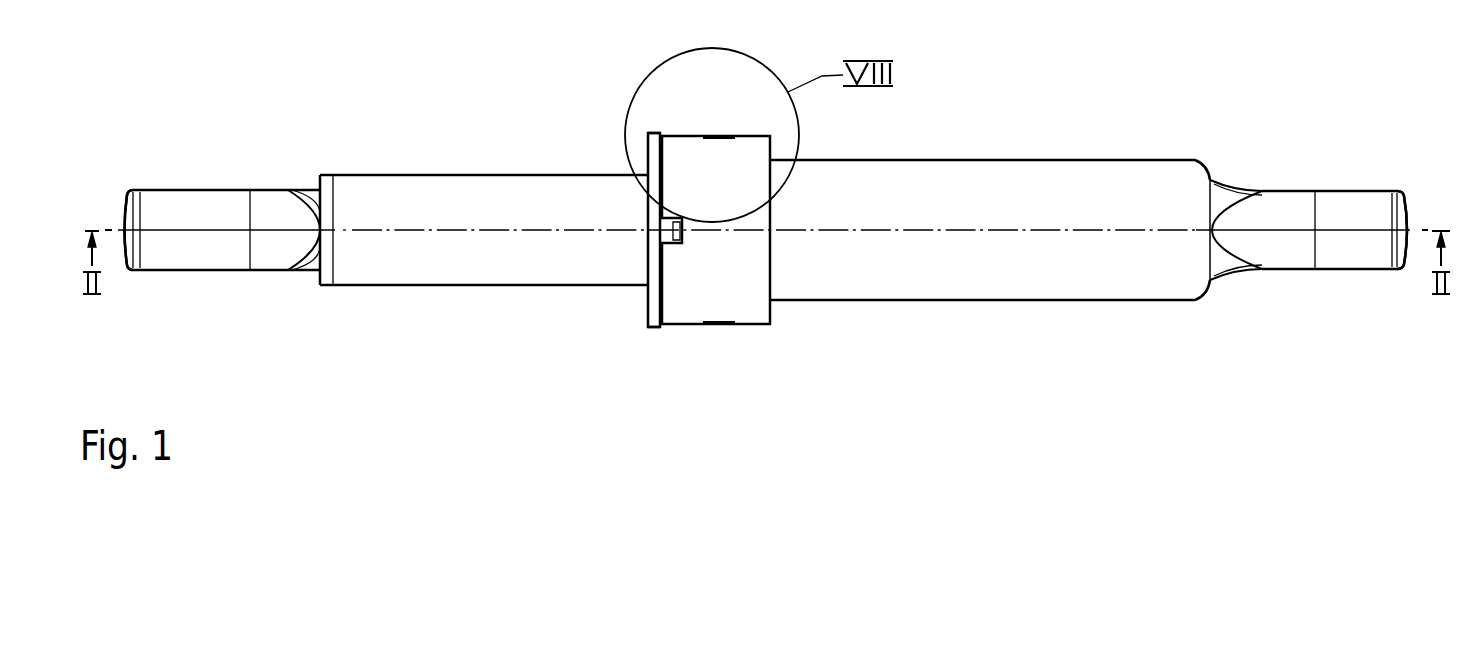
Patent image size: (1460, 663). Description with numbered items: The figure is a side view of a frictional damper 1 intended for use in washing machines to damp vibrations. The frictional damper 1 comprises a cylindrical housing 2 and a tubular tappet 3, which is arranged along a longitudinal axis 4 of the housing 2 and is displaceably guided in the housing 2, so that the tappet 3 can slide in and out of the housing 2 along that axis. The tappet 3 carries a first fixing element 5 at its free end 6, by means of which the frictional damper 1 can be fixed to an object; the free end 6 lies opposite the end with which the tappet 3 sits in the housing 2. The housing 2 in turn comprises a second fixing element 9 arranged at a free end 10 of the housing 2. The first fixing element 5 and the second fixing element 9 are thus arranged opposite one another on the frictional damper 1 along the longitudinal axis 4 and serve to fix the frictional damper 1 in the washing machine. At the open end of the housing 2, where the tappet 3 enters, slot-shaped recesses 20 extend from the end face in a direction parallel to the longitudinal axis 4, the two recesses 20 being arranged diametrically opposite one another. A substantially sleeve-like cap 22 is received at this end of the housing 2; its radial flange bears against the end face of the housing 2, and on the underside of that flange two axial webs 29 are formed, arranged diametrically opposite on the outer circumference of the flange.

The frictional damper 1 is at (930, 118).
The cylindrical housing 2 is at (1003, 160).
The tubular tappet 3 is at (472, 175).
The longitudinal axis 4 is at (1077, 230).
The first fixing element 5 is at (213, 213).
The free end of the tappet 6 is at (175, 190).
The second fixing element 9 is at (1333, 215).
The free end of the housing 10 is at (1372, 190).
The slot-shaped recess 20 is at (670, 241).
The cap 22 is at (648, 210).
The axial web 29 is at (668, 234).